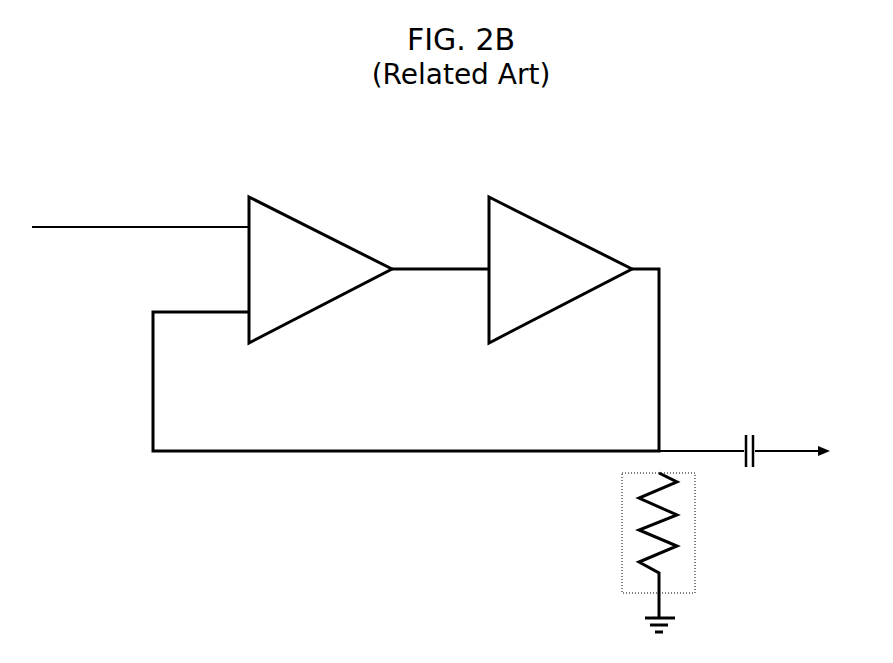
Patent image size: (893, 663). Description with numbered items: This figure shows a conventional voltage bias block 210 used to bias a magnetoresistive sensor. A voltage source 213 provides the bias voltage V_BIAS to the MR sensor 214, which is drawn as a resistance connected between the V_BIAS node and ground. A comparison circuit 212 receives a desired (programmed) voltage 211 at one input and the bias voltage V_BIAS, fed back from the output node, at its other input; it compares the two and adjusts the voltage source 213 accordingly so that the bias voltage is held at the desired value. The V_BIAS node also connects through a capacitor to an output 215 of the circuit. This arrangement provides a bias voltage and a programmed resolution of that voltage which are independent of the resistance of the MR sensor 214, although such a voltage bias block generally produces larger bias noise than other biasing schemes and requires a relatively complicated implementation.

The voltage bias block 210 is at (718, 155).
The desired (programmed) voltage 211 is at (132, 227).
The comparison circuit 212 is at (323, 232).
The voltage source 213 is at (555, 233).
The MR sensor 214 is at (695, 563).
The output coupling capacitor line 215 is at (801, 453).